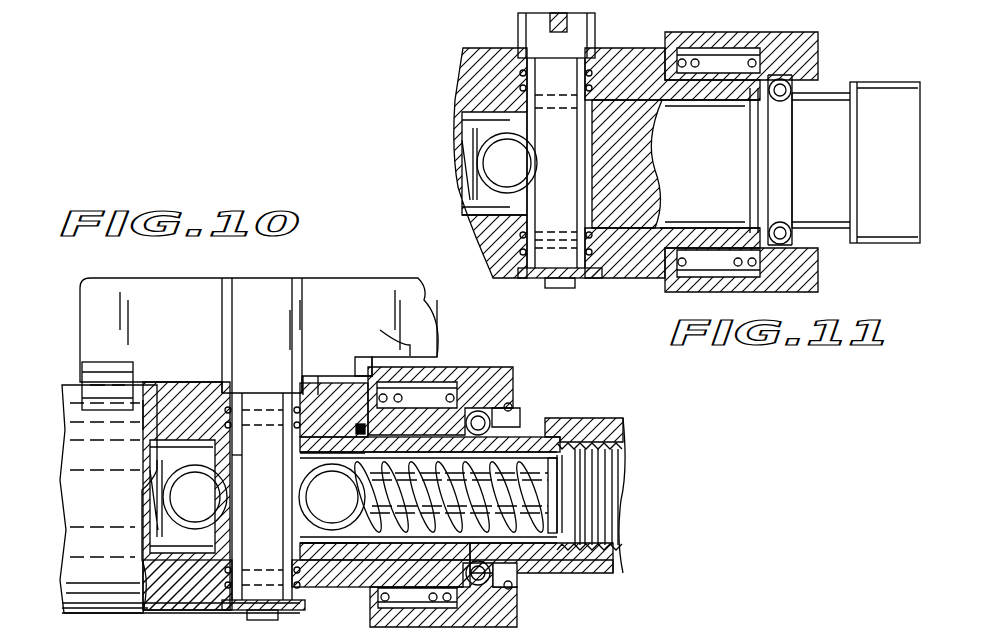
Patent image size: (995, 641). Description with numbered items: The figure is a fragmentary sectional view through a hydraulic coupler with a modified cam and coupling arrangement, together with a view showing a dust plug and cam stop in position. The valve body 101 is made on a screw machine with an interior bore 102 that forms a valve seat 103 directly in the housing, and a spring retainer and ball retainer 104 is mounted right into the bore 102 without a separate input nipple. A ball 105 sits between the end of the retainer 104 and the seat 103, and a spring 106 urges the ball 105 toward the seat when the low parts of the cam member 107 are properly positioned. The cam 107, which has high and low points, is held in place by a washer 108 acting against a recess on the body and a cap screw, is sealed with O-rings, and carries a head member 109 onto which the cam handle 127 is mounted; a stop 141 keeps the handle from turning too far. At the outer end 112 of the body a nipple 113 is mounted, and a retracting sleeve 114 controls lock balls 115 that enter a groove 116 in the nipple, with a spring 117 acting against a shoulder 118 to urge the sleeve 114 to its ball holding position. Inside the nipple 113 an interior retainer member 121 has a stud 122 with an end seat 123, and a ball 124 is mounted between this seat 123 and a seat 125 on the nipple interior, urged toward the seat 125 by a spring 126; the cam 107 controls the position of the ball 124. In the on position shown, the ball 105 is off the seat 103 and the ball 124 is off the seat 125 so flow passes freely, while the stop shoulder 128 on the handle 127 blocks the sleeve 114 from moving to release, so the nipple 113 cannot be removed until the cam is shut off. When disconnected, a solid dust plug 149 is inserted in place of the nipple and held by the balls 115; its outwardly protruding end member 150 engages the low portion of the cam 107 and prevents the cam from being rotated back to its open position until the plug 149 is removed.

In FIG. 10, the valve body 101 is at (110, 613).
In FIG. 10, the interior bore 102 is at (182, 545).
In FIG. 10, the valve seat 103 is at (233, 470).
In FIG. 11, the valve seat 103 is at (477, 220).
In FIG. 10, the spring retainer and ball retainer 104 is at (117, 528).
In FIG. 10, the ball 105 is at (210, 501).
In FIG. 11, the ball 105 is at (497, 155).
In FIG. 10, the spring 106 is at (183, 395).
In FIG. 10, the cam member 107 is at (250, 420).
In FIG. 11, the cam member 107 is at (515, 103).
In FIG. 10, the washer 108 is at (245, 605).
In FIG. 10, the head member 109 is at (248, 292).
In FIG. 10, the outer end 112 is at (517, 605).
In FIG. 10, the nipple 113 is at (605, 420).
In FIG. 10, the retracting sleeve 114 is at (440, 385).
In FIG. 11, the retracting sleeve 114 is at (790, 45).
In FIG. 10, the lock balls 115 is at (490, 415).
In FIG. 10, the groove 116 is at (532, 427).
In FIG. 10, the spring 117 is at (455, 385).
In FIG. 10, the shoulder 118 is at (420, 368).
In FIG. 10, the interior retainer member 121 is at (570, 497).
In FIG. 10, the stud 122 is at (530, 513).
In FIG. 10, the end seat 123 is at (373, 520).
In FIG. 10, the ball 124 is at (350, 501).
In FIG. 10, the seat 125 is at (326, 395).
In FIG. 10, the spring 126 is at (560, 483).
In FIG. 10, the cam handle 127 is at (350, 290).
In FIG. 10, the stop shoulder 128 is at (372, 357).
In FIG. 10, the stop 141 is at (135, 395).
In FIG. 11, the dust plug 149 is at (835, 103).
In FIG. 11, the outwardly protruding end member 150 is at (577, 178).